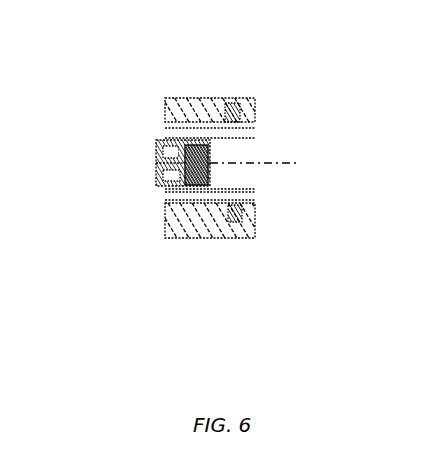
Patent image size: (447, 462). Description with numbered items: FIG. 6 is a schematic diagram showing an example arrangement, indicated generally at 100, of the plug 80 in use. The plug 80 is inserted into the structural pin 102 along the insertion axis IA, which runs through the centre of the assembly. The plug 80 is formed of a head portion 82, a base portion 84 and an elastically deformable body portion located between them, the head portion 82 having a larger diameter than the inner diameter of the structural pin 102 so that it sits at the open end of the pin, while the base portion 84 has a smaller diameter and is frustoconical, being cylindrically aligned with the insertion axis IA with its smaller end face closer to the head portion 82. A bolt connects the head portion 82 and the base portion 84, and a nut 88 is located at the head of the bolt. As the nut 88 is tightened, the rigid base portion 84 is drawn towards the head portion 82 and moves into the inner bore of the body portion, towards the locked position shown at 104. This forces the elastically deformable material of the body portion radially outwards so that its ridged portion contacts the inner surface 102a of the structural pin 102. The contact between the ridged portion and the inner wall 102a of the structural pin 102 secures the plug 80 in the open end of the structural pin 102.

The example arrangement of the plug in use 100 is at (126, 104).
The structural pin 102 is at (220, 130).
The inner surface of the structural pin 102a is at (213, 188).
The locked position 104 is at (174, 152).
The plug 80 is at (150, 195).
The nut 88 is at (157, 163).
The head portion 82 is at (158, 183).
The base portion 84 is at (210, 173).
The insertion axis IA is at (264, 163).